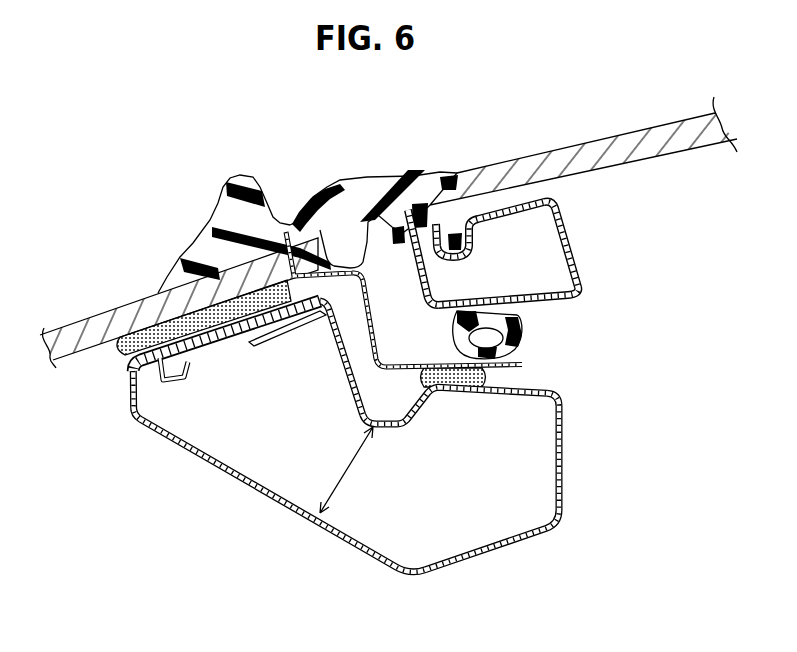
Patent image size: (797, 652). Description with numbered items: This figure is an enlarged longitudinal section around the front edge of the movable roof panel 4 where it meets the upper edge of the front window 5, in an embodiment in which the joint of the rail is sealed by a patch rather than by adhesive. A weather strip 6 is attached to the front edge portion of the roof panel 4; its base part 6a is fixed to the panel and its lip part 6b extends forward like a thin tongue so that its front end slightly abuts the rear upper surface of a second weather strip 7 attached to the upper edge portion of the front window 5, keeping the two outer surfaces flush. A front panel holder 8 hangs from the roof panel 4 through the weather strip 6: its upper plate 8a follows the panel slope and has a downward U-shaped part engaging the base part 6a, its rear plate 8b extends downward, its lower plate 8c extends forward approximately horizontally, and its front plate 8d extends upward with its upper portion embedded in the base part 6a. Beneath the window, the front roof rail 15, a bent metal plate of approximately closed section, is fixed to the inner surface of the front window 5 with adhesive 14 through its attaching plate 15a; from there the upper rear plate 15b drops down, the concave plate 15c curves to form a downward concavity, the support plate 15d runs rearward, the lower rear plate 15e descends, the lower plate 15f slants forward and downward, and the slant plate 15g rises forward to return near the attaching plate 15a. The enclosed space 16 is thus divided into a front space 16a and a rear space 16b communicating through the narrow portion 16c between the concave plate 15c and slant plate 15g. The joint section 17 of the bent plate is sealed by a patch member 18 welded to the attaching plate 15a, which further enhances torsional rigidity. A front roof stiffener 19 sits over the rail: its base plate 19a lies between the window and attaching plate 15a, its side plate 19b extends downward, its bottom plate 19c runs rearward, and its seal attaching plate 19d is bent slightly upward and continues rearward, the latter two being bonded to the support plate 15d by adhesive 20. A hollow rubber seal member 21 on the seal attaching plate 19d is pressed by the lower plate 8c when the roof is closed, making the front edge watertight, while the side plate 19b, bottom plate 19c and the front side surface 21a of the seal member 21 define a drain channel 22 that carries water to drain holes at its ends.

The roof panel 4 is at (645, 129).
The front window 5 is at (56, 330).
The weather strip 6 is at (376, 189).
The base part 6a is at (423, 177).
The lip part 6b is at (313, 196).
The weather strip 7 is at (227, 207).
The front panel holder 8 is at (544, 215).
The upper plate 8a is at (512, 198).
The rear plate 8b is at (572, 228).
The lower plate 8c is at (503, 297).
The front plate 8d is at (434, 270).
The adhesive 14 is at (120, 348).
The front roof rail 15 is at (356, 453).
The attaching plate 15a is at (257, 338).
The upper rear plate 15b is at (340, 368).
The concave plate 15c is at (393, 431).
The support plate 15d is at (483, 393).
The lower rear plate 15e is at (566, 467).
The lower plate 15f is at (505, 550).
The slant plate 15g is at (273, 500).
The closed cross sectional space 16 is at (396, 538).
The front space 16a is at (288, 453).
The rear space 16b is at (498, 495).
The narrow portion 16c is at (350, 473).
The joint section 17 is at (187, 366).
The patch member 18 is at (130, 372).
The front roof stiffener 19 is at (440, 258).
The base plate 19a is at (286, 232).
The side plate 19b is at (358, 273).
The bottom plate 19c is at (410, 368).
The seal attaching plate 19d is at (533, 364).
The adhesive 20 is at (490, 378).
The seal member 21 is at (498, 333).
The front side surface 21a is at (456, 343).
The drain channel 22 is at (404, 330).